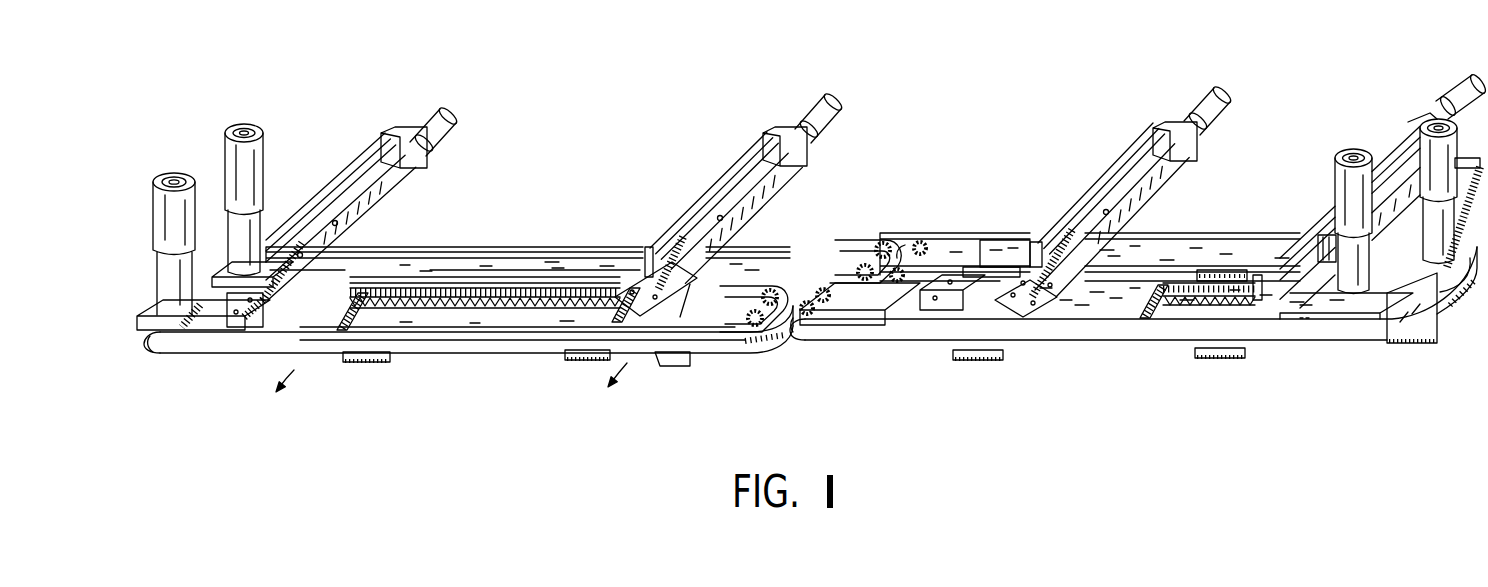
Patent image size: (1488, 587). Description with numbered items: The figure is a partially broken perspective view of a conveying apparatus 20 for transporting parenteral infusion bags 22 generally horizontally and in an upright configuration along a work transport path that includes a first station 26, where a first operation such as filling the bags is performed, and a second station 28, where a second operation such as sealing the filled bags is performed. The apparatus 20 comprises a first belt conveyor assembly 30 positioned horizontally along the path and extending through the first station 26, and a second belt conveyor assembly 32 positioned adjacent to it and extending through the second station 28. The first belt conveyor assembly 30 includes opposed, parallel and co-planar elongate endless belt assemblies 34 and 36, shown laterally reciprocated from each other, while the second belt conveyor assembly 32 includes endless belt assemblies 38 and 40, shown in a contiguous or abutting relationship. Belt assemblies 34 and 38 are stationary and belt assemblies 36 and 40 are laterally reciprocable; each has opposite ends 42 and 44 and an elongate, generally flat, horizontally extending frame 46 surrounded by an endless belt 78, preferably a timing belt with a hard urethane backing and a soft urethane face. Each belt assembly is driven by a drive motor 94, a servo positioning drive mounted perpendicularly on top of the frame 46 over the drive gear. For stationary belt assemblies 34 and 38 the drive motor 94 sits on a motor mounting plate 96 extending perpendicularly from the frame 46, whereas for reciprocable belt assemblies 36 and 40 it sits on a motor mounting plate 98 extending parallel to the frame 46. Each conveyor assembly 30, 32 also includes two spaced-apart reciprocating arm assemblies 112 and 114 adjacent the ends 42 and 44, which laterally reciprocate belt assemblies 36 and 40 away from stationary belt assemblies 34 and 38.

The conveying apparatus 20 is at (1039, 80).
The parenteral infusion bags 22 is at (359, 363).
The first station 26 is at (529, 190).
The second station 28 is at (1232, 174).
The first belt conveyor assembly 30 is at (442, 363).
The second belt conveyor assembly 32 is at (1071, 356).
The endless belt assembly 34 is at (539, 237).
The endless belt assembly 36 is at (522, 351).
The endless belt assembly 38 is at (1253, 227).
The endless belt assembly 40 is at (1155, 348).
The end 42 is at (910, 246).
The end 44 is at (880, 240).
The frame 46 is at (808, 258).
The endless belt 78 is at (592, 243).
The drive motor 94 is at (247, 122).
The motor mounting plate 96 is at (310, 173).
The motor mounting plate 98 is at (150, 312).
The reciprocating arm assembly 112 is at (452, 100).
The reciprocating arm assembly 114 is at (831, 97).